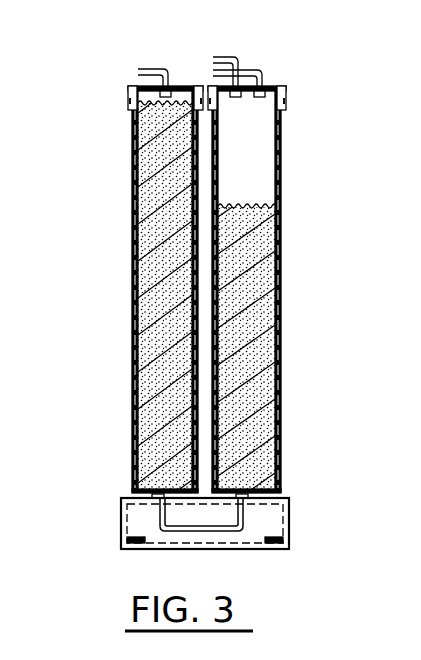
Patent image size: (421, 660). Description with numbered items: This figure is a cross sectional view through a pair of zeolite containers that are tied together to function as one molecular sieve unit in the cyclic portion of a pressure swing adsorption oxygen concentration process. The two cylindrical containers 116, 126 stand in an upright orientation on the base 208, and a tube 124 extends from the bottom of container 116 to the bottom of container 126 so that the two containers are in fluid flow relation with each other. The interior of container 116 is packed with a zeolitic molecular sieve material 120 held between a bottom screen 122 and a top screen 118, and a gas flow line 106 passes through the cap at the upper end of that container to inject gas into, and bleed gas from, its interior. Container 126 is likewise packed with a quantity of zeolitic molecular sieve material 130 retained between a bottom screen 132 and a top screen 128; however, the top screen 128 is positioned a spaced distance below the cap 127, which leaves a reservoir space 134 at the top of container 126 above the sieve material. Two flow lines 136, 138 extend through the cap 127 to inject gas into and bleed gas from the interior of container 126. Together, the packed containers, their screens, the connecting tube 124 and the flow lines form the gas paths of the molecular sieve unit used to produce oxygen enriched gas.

The gas flow line 106 is at (166, 68).
The cylindrical container 116 is at (134, 272).
The top screen 118 is at (130, 88).
The zeolitic molecular sieve material 120 is at (170, 140).
The bottom screen 122 is at (150, 492).
The tube 124 is at (245, 528).
The cylindrical container 126 is at (281, 340).
The cap 127 is at (286, 99).
The top screen 128 is at (258, 204).
The zeolitic molecular sieve material 130 is at (268, 252).
The bottom screen 132 is at (268, 493).
The reservoir space 134 is at (252, 146).
The flow line 136 is at (226, 57).
The flow line 138 is at (264, 74).
The base 208 is at (124, 530).